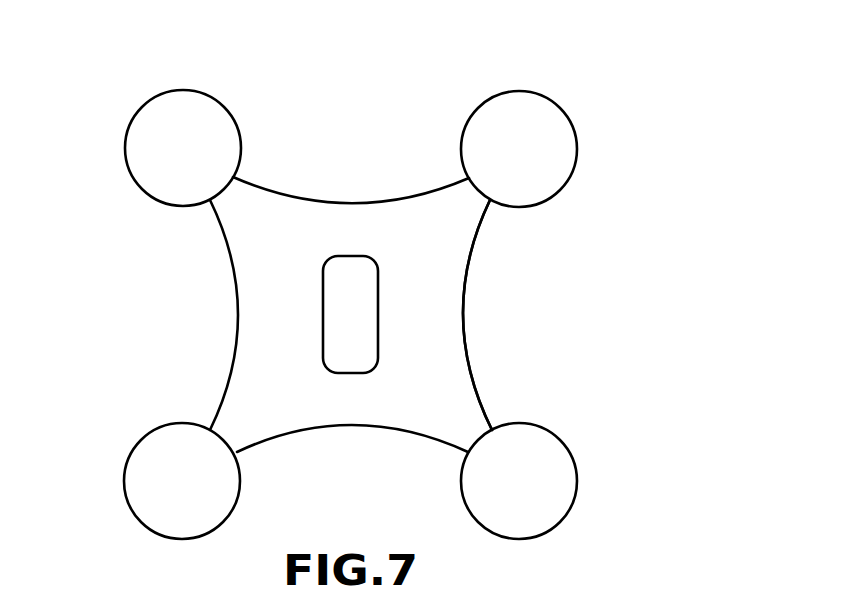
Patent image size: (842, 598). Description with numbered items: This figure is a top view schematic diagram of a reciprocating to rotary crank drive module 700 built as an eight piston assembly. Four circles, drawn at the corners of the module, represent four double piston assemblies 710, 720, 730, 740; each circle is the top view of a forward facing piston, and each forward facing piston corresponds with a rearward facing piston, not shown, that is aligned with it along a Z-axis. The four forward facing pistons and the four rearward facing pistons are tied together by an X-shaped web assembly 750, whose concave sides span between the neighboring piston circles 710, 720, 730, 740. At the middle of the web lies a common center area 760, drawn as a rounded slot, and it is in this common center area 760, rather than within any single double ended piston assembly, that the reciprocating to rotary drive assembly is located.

The reciprocating to rotary crank drive module 700 is at (437, 88).
The double piston assembly 710 is at (134, 123).
The double piston assembly 720 is at (577, 152).
The double piston assembly 730 is at (577, 473).
The double piston assembly 740 is at (135, 503).
The X-shaped web assembly 750 is at (465, 321).
The common center area 760 is at (325, 312).